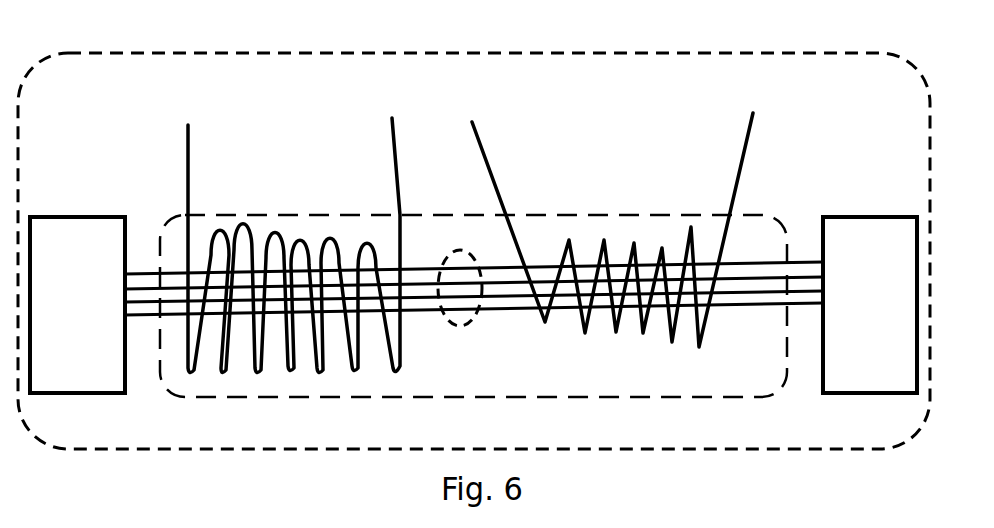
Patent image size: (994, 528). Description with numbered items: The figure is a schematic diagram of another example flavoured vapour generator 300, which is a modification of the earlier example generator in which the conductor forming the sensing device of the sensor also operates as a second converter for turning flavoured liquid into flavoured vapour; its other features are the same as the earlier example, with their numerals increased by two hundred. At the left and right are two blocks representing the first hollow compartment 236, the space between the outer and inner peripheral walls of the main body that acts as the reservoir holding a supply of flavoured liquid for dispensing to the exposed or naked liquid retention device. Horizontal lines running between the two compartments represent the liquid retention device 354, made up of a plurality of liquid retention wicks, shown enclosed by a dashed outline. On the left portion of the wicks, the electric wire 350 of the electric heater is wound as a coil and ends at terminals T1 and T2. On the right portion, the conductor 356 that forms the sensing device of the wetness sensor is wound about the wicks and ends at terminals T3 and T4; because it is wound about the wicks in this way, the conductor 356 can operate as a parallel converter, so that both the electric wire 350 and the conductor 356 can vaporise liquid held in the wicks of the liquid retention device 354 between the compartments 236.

The flavoured vapour generator 300 is at (672, 46).
The first hollow compartment 236 is at (473, 305).
The electric wire 350 is at (293, 222).
The liquid retention device 354 is at (474, 318).
The conductor 356 is at (619, 225).
The terminal T1 is at (188, 104).
The terminal T2 is at (391, 97).
The terminal T3 is at (465, 102).
The terminal T4 is at (762, 93).